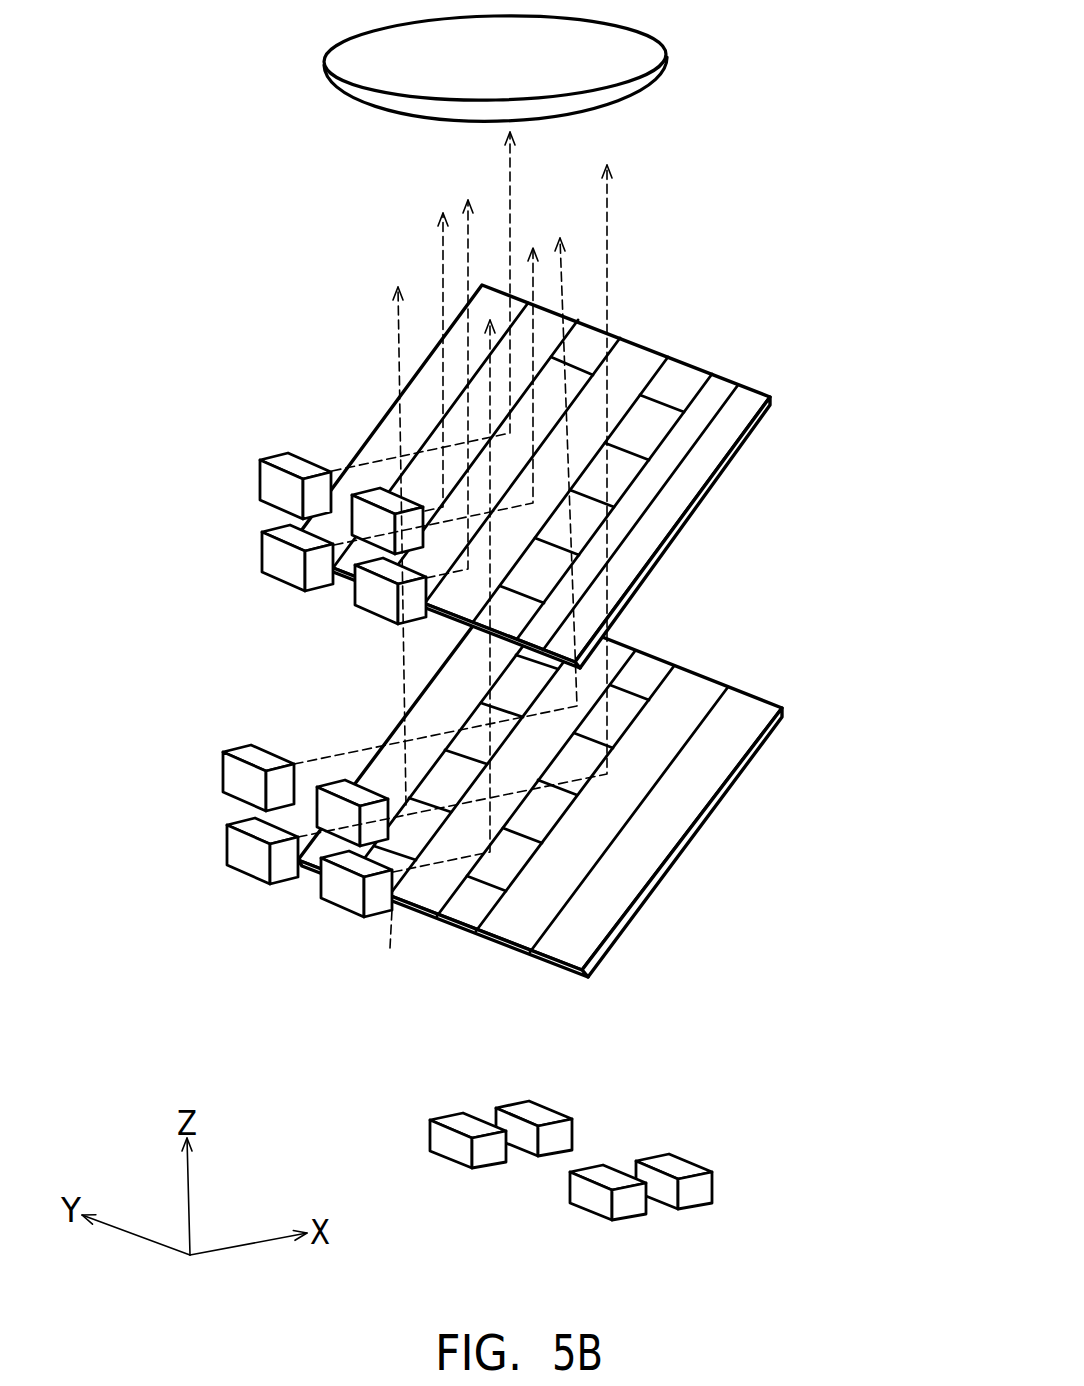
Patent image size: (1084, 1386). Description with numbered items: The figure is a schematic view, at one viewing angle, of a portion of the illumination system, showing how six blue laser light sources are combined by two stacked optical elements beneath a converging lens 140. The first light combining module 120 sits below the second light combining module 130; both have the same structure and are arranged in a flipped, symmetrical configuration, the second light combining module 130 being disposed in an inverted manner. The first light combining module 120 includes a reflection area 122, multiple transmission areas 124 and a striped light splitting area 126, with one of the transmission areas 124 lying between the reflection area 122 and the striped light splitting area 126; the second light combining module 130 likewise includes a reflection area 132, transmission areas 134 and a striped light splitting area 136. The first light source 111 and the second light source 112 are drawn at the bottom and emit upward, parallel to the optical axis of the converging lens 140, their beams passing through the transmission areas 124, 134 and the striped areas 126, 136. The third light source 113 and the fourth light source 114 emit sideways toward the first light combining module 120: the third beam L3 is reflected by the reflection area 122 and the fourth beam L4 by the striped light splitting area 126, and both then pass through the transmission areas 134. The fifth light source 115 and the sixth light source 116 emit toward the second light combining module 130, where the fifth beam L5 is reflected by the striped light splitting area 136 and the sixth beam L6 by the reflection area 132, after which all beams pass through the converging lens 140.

The first light source 111 is at (593, 1203).
The second light source 112 is at (445, 1153).
The third light source 113 is at (335, 818).
The fourth light source 114 is at (240, 776).
The fifth light source 115 is at (365, 521).
The sixth light source 116 is at (270, 484).
The first light combining module 120 is at (757, 668).
The reflection area 122 is at (493, 880).
The transmission areas 124 is at (614, 653).
The striped light splitting area 126 is at (540, 698).
The second light combining module 130 is at (852, 360).
The reflection area 132 is at (573, 377).
The transmission areas 134 is at (645, 352).
The striped light splitting area 136 is at (575, 572).
The converging lens 140 is at (647, 47).
The third beam L3 is at (388, 948).
The fourth beam L4 is at (398, 652).
The fifth beam L5 is at (605, 217).
The sixth beam L6 is at (511, 172).